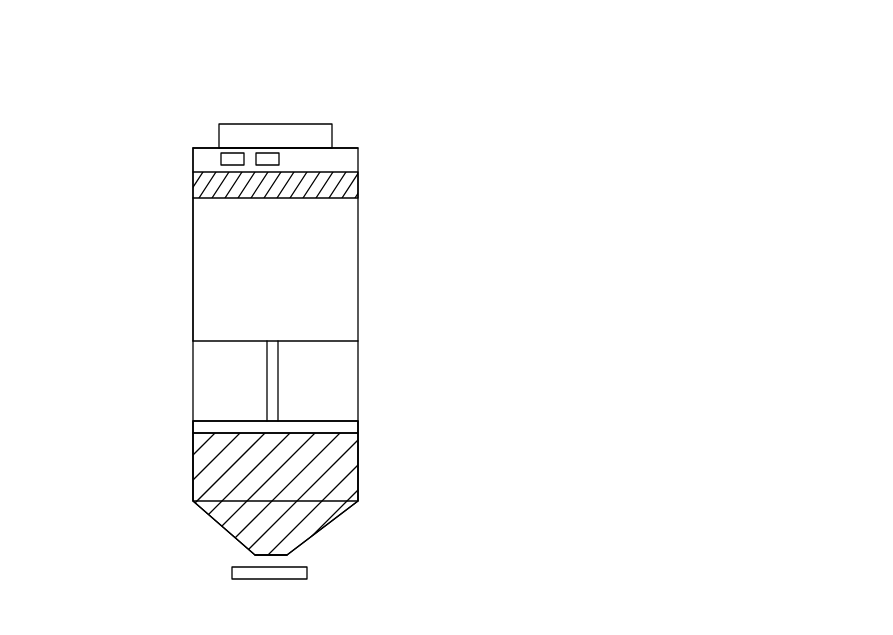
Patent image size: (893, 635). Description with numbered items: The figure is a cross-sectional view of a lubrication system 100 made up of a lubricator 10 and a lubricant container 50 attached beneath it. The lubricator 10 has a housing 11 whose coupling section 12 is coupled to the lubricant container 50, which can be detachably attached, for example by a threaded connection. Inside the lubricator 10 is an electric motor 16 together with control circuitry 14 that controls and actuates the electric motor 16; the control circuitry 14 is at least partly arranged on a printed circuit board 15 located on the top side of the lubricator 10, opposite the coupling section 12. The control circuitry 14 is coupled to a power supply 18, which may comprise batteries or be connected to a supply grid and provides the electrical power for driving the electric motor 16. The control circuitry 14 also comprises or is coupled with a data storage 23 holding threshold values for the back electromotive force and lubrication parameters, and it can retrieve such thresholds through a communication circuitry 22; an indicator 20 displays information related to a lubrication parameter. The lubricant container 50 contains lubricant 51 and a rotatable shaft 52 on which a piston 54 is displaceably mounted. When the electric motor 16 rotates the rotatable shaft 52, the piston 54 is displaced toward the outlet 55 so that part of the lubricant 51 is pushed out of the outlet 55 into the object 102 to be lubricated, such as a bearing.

The lubrication system 100 is at (425, 78).
The lubricator 10 is at (146, 203).
The housing 11 is at (193, 297).
The coupling section 12 is at (192, 320).
The control circuitry 14 is at (360, 148).
The printed circuit board 15 is at (196, 148).
The electric motor 16 is at (360, 258).
The power supply 18 is at (360, 186).
The indicator 20 is at (300, 122).
The communication circuitry 22 is at (233, 151).
The data storage 23 is at (268, 151).
The lubricant container 50 is at (160, 406).
The lubricant 51 is at (359, 466).
The rotatable shaft 52 is at (279, 396).
The piston 54 is at (359, 425).
The outlet 55 is at (256, 555).
The object to be lubricated 102 is at (311, 569).